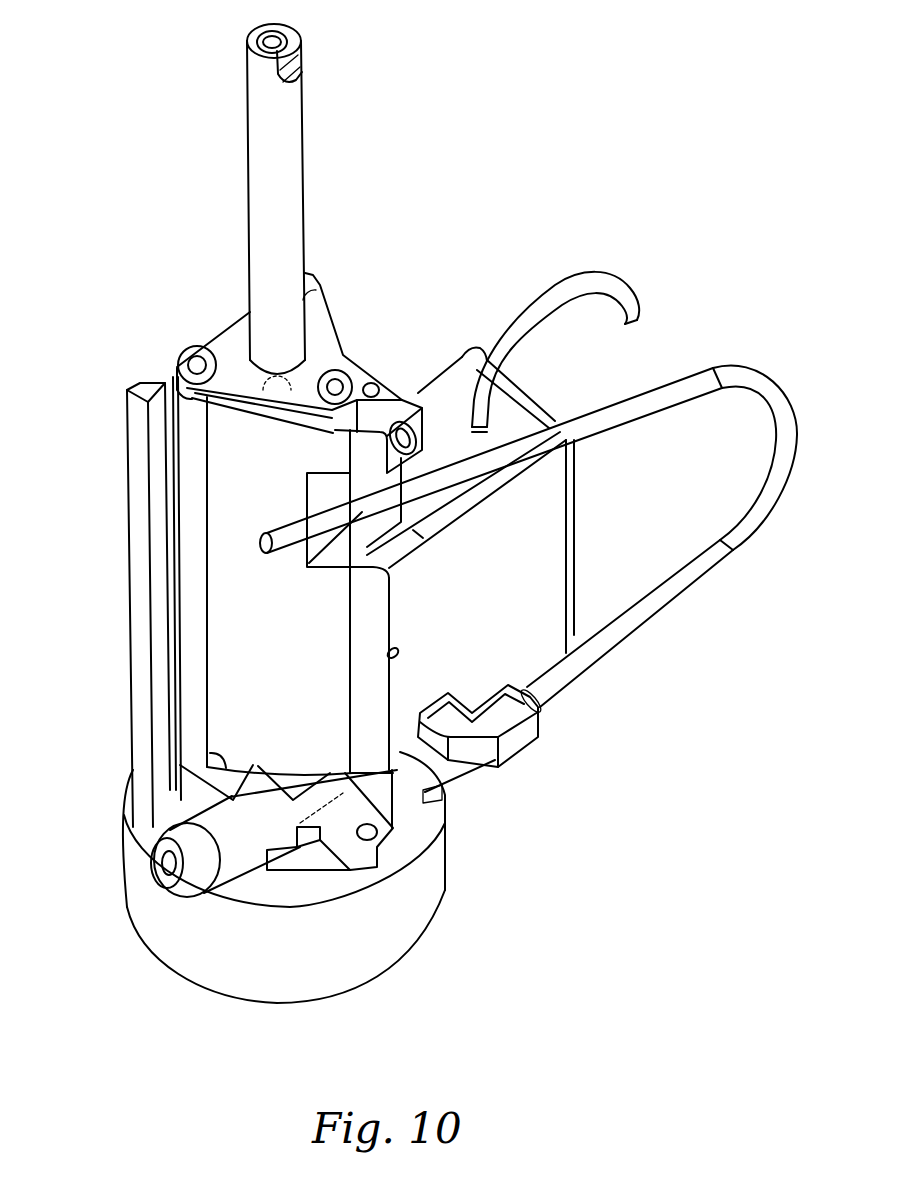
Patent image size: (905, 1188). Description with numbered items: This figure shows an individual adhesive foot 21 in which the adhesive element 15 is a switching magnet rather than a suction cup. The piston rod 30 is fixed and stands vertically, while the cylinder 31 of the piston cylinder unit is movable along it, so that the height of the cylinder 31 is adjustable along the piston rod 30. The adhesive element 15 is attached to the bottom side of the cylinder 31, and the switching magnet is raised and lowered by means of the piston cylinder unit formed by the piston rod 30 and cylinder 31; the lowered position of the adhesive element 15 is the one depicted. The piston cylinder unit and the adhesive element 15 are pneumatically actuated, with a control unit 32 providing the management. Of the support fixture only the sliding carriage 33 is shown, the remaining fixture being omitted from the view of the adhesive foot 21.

The adhesive foot 21 is at (626, 174).
The piston rod 30 is at (288, 172).
The lifting cylinder 31 is at (257, 482).
The control unit 32 is at (520, 547).
The sliding carriage 33 is at (165, 572).
The adhesive element 15 is at (403, 917).